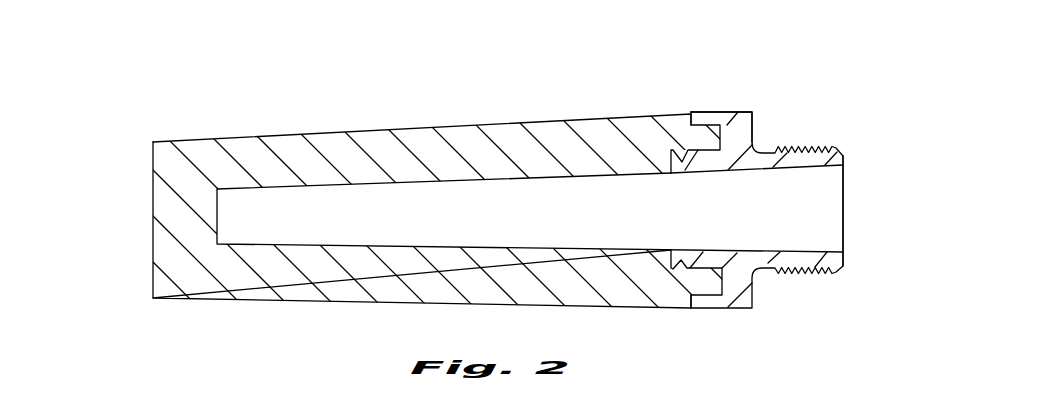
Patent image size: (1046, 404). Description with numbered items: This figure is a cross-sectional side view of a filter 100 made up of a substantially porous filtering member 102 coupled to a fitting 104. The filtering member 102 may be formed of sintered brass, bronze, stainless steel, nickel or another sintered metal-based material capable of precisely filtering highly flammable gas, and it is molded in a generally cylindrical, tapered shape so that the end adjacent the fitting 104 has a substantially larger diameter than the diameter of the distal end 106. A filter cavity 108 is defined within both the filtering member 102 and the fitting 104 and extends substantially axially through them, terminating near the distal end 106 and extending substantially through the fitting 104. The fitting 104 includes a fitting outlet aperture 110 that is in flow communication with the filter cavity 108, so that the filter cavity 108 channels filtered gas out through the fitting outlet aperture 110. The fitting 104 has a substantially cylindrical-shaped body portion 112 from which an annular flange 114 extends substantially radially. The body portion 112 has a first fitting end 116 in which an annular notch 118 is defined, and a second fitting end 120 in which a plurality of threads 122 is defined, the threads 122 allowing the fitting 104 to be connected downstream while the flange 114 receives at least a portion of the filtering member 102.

The filter 100 is at (148, 107).
The filtering member 102 is at (283, 133).
The fitting 104 is at (810, 314).
The distal end 106 is at (138, 297).
The filter cavity 108 is at (393, 203).
The fitting outlet aperture 110 is at (843, 218).
The body portion 112 is at (737, 253).
The flange 114 is at (743, 120).
The first fitting end 116 is at (657, 233).
The annular notch 118 is at (680, 150).
The second fitting end 120 is at (865, 176).
The threads 122 is at (780, 152).